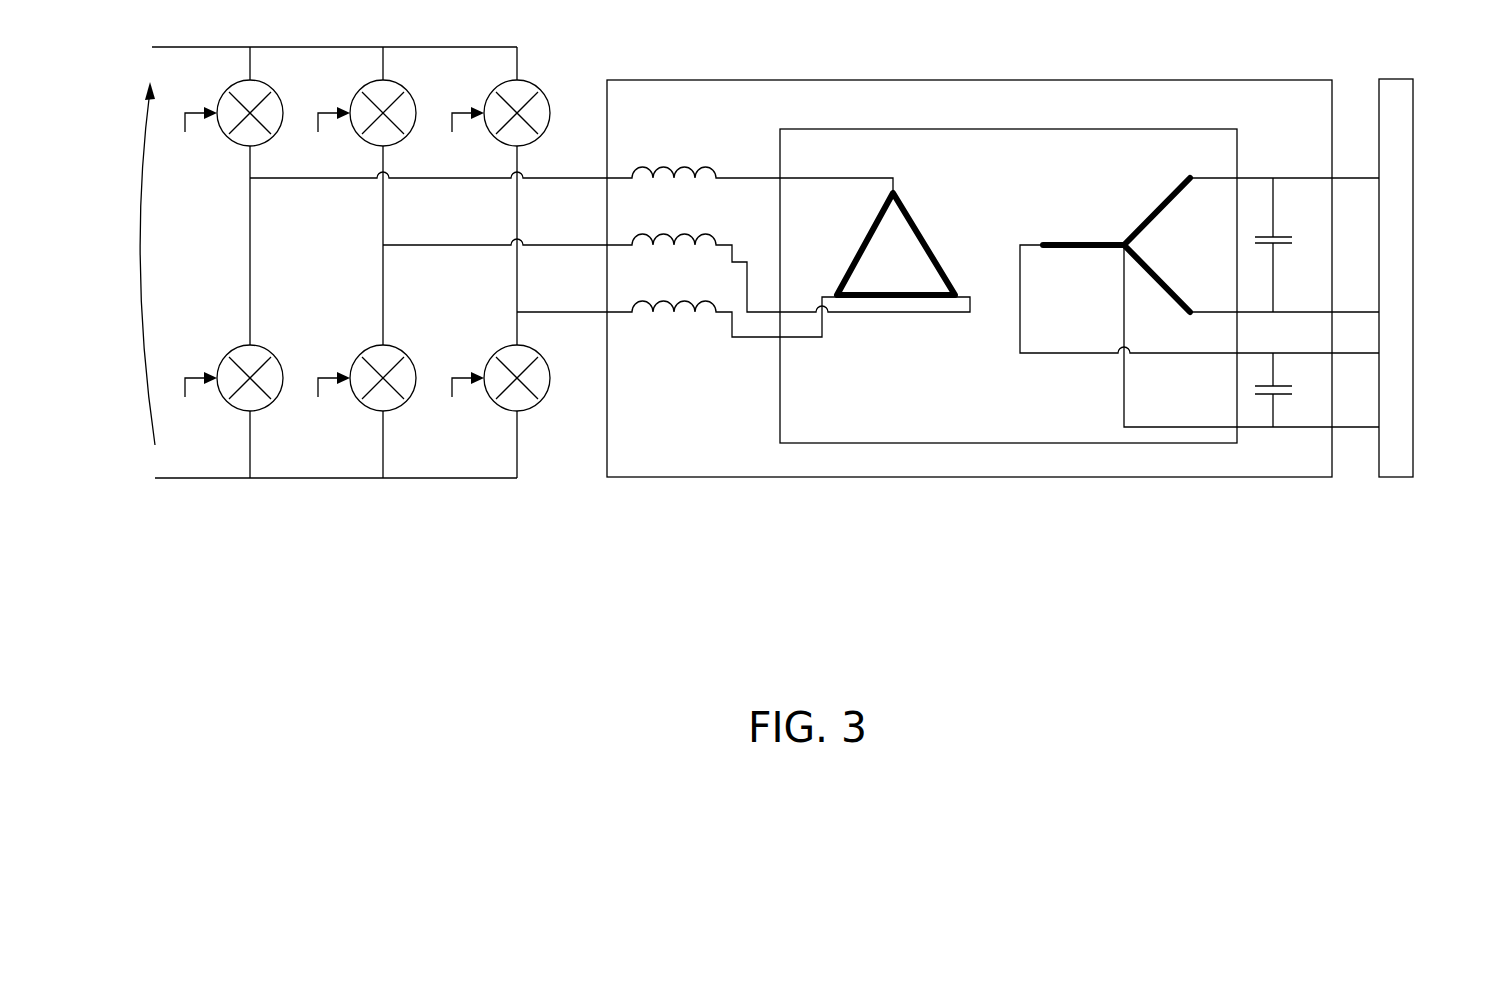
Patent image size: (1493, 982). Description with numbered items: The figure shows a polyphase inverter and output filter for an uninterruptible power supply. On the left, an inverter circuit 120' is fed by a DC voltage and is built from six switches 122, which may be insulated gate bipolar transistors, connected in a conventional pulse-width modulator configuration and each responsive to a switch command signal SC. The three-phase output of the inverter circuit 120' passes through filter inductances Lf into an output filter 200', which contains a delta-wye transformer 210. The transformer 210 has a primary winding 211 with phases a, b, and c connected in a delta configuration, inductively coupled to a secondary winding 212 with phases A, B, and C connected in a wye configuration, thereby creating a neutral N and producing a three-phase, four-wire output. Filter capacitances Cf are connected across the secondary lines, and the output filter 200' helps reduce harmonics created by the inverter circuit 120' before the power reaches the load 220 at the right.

The inverter circuit 120' is at (375, 327).
The switches 122 is at (283, 110).
The output filter 200' is at (993, 255).
The delta-wye transformer 210 is at (1013, 129).
The primary winding 211 is at (895, 262).
The secondary winding 212 is at (1122, 242).
The load 220 is at (1398, 78).